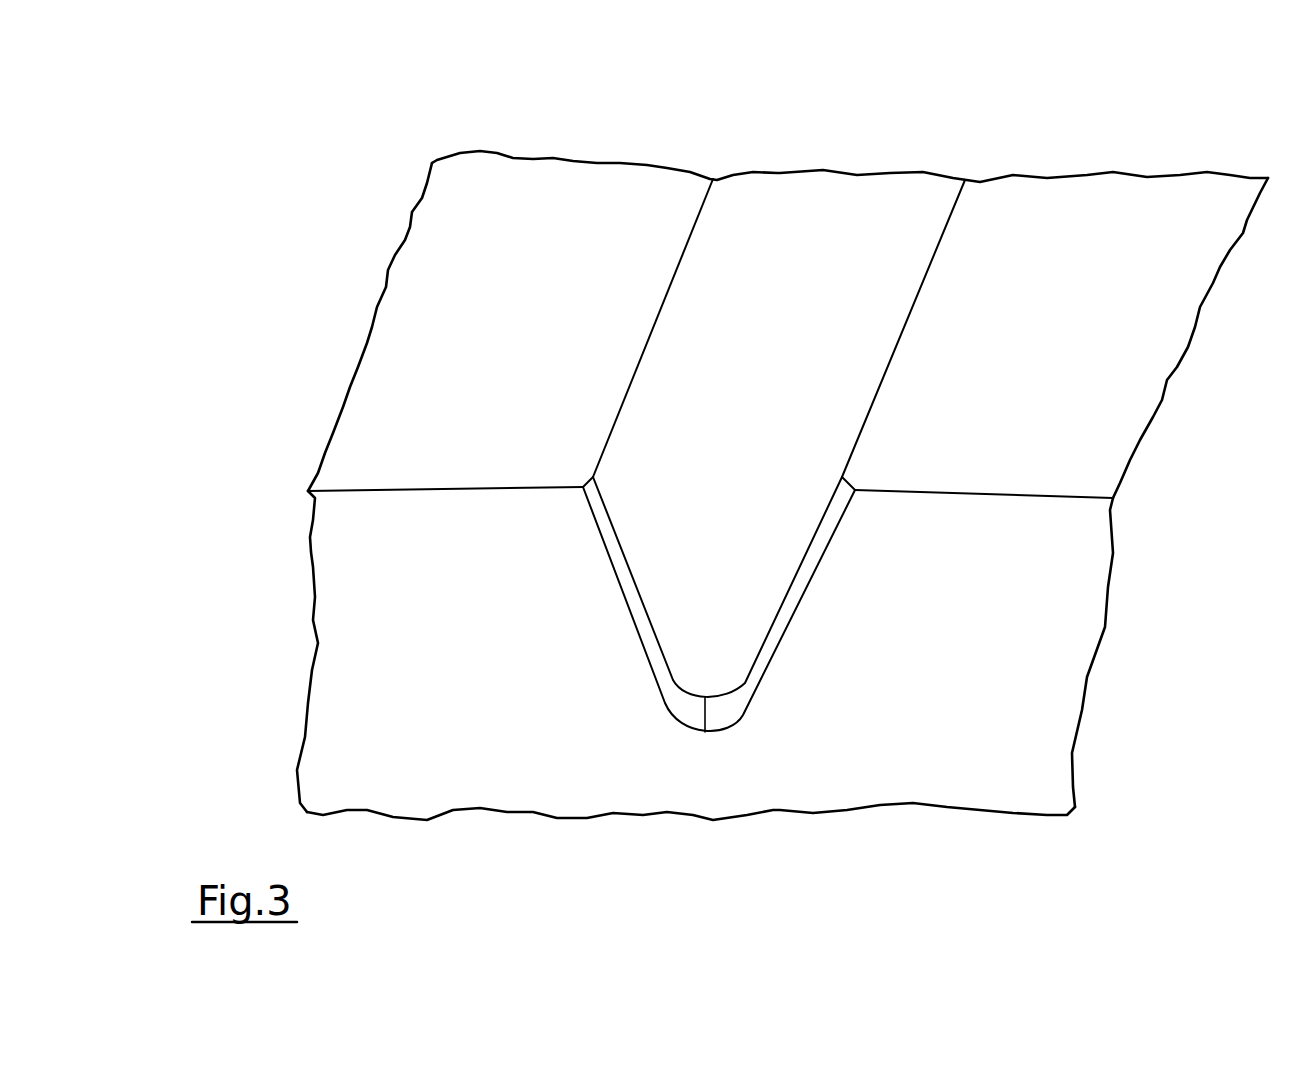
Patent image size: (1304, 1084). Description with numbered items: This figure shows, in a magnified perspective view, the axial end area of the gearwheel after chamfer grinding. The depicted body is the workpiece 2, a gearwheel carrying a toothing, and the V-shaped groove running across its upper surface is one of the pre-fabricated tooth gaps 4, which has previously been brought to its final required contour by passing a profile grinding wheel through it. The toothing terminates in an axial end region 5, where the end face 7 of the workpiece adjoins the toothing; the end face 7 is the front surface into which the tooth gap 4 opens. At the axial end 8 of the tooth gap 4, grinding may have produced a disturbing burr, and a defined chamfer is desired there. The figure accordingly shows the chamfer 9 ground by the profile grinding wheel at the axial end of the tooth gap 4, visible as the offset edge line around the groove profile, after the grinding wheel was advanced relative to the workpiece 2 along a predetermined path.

The workpiece 2 is at (1150, 215).
The tooth gap 4 is at (823, 323).
The axial end region 5 is at (1155, 522).
The end face 7 is at (937, 744).
The axial end of the tooth gap 8 is at (262, 525).
The chamfer 9 is at (688, 710).